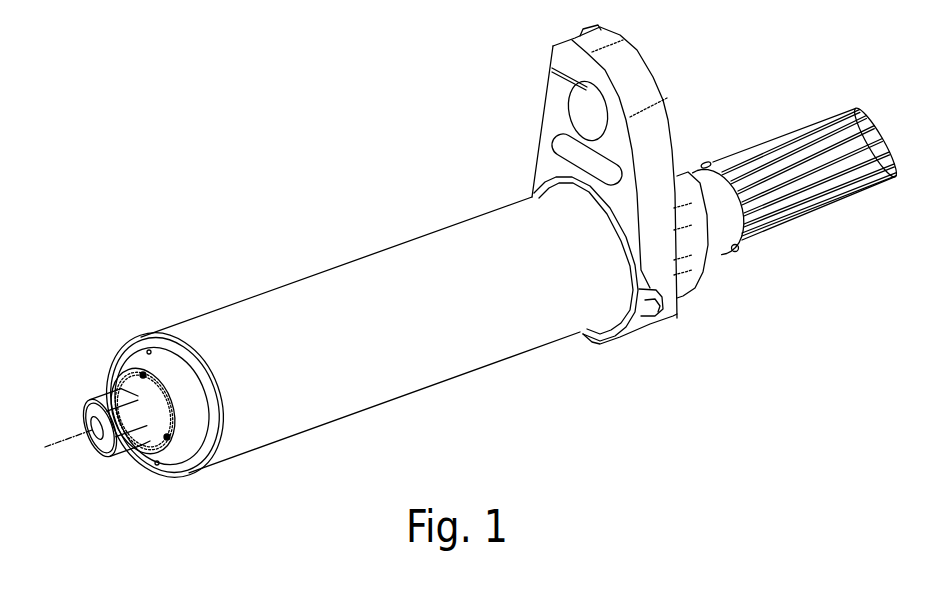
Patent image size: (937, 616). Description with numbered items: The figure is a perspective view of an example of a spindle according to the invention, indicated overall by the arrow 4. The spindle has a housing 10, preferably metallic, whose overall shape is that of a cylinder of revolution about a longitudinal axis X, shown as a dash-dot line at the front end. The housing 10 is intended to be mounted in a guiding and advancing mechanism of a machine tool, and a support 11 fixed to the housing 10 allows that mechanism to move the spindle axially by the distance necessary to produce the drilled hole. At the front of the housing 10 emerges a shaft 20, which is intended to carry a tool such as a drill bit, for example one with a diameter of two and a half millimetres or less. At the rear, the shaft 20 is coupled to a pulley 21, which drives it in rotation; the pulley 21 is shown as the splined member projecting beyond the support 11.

The electromechanical actuator 4 is at (467, 252).
The housing 10 is at (275, 290).
The support 11 is at (546, 90).
The shaft 20 is at (124, 374).
The pulley 21 is at (813, 120).
The longitudinal axis X is at (79, 428).